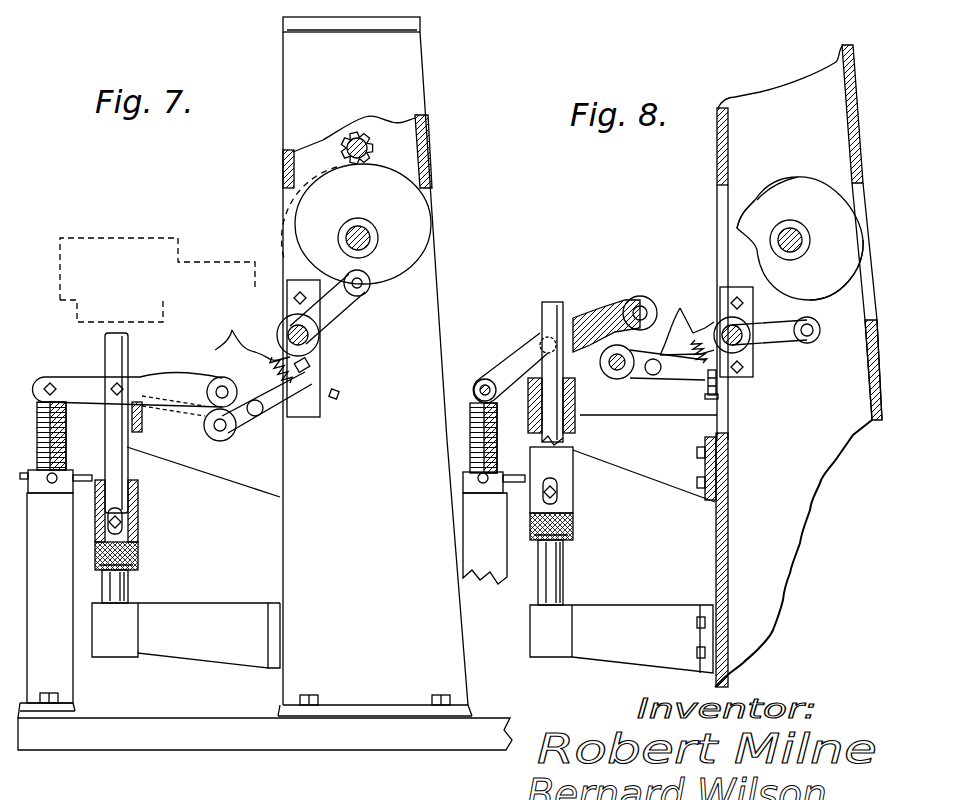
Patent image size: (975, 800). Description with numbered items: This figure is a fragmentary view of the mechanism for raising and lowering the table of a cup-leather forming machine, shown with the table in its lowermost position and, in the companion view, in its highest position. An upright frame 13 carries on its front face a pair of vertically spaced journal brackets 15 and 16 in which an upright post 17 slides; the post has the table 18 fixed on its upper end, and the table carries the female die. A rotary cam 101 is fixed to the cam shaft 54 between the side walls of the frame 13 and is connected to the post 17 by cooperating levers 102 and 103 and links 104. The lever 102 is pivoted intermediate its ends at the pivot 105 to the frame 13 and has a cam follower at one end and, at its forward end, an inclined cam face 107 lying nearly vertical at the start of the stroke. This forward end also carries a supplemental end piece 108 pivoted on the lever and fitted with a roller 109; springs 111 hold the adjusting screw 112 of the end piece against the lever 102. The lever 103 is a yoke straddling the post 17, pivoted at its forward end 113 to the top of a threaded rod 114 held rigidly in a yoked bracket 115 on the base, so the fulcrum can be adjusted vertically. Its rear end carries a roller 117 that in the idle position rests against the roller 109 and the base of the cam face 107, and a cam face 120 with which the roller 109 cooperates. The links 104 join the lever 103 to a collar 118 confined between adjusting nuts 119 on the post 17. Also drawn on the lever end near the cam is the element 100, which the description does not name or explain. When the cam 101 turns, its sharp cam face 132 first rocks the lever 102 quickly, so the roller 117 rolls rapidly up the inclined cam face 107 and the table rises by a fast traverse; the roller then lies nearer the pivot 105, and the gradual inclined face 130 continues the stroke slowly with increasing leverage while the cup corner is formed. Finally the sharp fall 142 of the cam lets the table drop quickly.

In FIG. 7, the upright frame 13 is at (325, 470).
In FIG. 8, the upright frame 13 is at (789, 366).
In FIG. 7, the journal bracket 15 is at (275, 490).
In FIG. 8, the journal bracket 15 is at (645, 458).
In FIG. 7, the journal bracket 16 is at (186, 635).
In FIG. 8, the journal bracket 16 is at (621, 639).
In FIG. 7, the post 17 is at (130, 583).
In FIG. 8, the post 17 is at (565, 563).
In FIG. 7, the table 18 is at (60, 238).
In FIG. 7, the cam shaft 54 is at (370, 238).
In FIG. 8, the roller 100 is at (815, 340).
In FIG. 7, the rotary cam 101 is at (330, 198).
In FIG. 8, the rotary cam 101 is at (823, 194).
In FIG. 8, the lever 102 is at (785, 348).
In FIG. 7, the lever 103 is at (170, 378).
In FIG. 8, the lever 103 is at (600, 310).
In FIG. 7, the links 104 is at (130, 472).
In FIG. 8, the links 104 is at (575, 482).
In FIG. 7, the pivot 105 is at (285, 325).
In FIG. 8, the pivot 105 is at (740, 320).
In FIG. 7, the cam face 107 is at (240, 345).
In FIG. 8, the cam face 107 is at (681, 330).
In FIG. 7, the supplemental end piece 108 is at (270, 432).
In FIG. 8, the supplemental end piece 108 is at (688, 382).
In FIG. 7, the roller 109 is at (258, 460).
In FIG. 8, the roller 109 is at (613, 380).
In FIG. 7, the springs 111 is at (305, 368).
In FIG. 7, the adjusting screw 112 is at (336, 395).
In FIG. 8, the adjusting screw 112 is at (718, 396).
In FIG. 8, the forward end 113 is at (485, 378).
In FIG. 7, the threaded rod 114 is at (50, 438).
In FIG. 8, the threaded rod 114 is at (490, 440).
In FIG. 7, the yoked bracket 115 is at (50, 378).
In FIG. 7, the roller 117 is at (215, 380).
In FIG. 8, the roller 117 is at (648, 300).
In FIG. 7, the collar 118 is at (140, 530).
In FIG. 8, the collar 118 is at (576, 510).
In FIG. 7, the adjusting nuts 119 is at (138, 497).
In FIG. 8, the adjusting nuts 119 is at (576, 528).
In FIG. 7, the cam face 120 is at (160, 412).
In FIG. 8, the inclined face 130 is at (758, 203).
In FIG. 8, the sharp cam face 132 is at (740, 235).
In FIG. 8, the sharp fall 142 is at (770, 282).